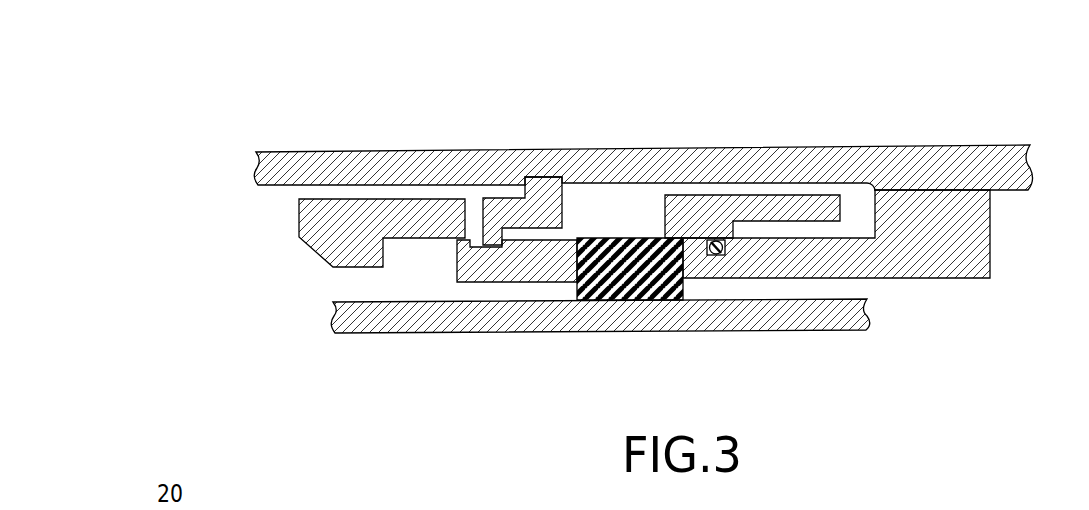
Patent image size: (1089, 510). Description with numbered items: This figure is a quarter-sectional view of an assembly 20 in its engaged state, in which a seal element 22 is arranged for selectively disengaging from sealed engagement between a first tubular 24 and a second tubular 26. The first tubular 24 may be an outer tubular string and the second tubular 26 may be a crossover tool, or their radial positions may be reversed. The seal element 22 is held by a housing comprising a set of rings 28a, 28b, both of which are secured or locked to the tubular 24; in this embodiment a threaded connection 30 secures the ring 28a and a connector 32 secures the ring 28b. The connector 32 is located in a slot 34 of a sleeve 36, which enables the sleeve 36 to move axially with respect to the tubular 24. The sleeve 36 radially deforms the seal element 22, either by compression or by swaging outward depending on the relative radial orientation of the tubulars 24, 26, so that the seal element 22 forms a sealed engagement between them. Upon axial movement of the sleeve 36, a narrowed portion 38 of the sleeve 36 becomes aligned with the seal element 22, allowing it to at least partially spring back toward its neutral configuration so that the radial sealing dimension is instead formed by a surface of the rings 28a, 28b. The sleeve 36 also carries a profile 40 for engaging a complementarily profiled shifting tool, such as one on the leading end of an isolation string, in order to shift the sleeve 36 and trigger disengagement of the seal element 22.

The assembly 20 is at (190, 145).
The seal element 22 is at (645, 280).
The first tubular 24 is at (727, 167).
The second tubular 26 is at (827, 316).
The ring 28a is at (950, 260).
The ring 28b is at (517, 273).
The threaded connection 30 is at (977, 205).
The connector 32 is at (547, 190).
The slot 34 is at (597, 212).
The sleeve 36 is at (333, 218).
The narrowed portion 38 is at (793, 203).
The profile 40 is at (388, 255).